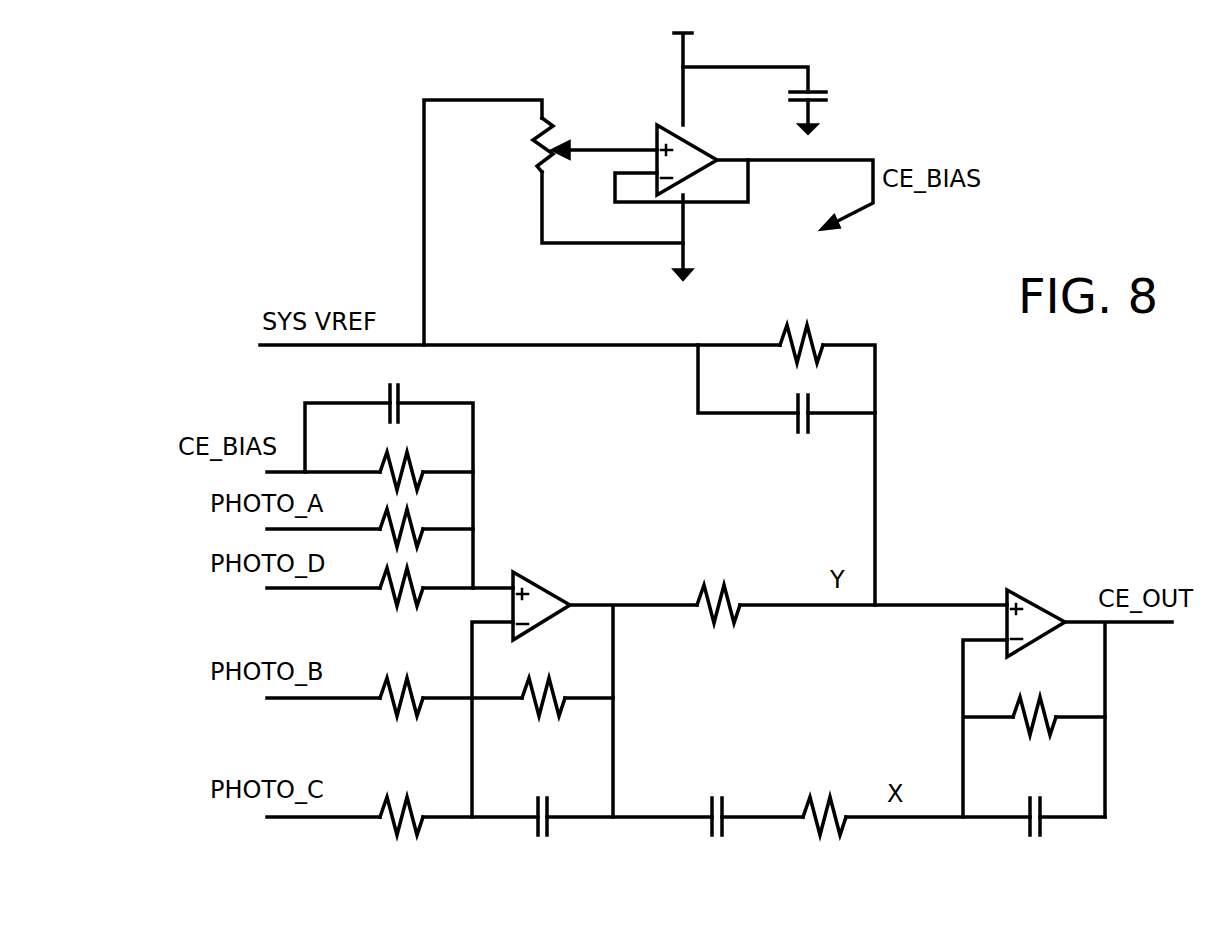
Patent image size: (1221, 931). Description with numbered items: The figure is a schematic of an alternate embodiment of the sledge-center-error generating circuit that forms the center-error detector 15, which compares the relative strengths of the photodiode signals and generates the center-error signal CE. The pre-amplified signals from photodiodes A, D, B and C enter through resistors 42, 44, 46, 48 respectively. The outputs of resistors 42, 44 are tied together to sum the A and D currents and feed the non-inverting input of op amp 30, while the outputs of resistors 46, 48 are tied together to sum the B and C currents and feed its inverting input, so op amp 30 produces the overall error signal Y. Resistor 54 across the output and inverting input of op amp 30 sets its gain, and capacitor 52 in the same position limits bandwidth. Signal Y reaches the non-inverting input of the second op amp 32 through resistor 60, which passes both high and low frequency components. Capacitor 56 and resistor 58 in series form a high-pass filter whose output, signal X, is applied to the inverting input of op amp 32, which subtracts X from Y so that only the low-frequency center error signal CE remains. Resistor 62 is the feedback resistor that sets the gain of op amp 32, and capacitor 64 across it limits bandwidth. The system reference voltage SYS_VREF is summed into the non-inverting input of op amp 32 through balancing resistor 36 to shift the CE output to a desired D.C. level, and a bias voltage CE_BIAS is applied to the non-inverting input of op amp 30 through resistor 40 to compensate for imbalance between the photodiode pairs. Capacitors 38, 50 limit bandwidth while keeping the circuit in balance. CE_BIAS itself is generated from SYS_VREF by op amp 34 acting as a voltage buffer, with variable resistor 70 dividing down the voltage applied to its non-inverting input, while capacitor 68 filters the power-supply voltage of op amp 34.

The center-error detector 15 is at (1080, 453).
The op amp 30 is at (546, 588).
The second op amp 32 is at (1038, 604).
The op amp 34 is at (690, 141).
The balancing resistor 36 is at (796, 364).
The capacitor 38 is at (796, 427).
The resistor 40 is at (410, 486).
The resistor 42 is at (410, 543).
The resistor 44 is at (414, 606).
The resistor 46 is at (414, 716).
The resistor 48 is at (414, 834).
The capacitor 50 is at (388, 410).
The capacitor 52 is at (538, 836).
The resistor 54 is at (556, 716).
The capacitor 56 is at (712, 836).
The resistor 58 is at (837, 834).
The resistor 60 is at (736, 630).
The resistor 62 is at (1050, 734).
The capacitor 64 is at (1032, 836).
The capacitor 68 is at (792, 97).
The variable resistor 70 is at (530, 158).